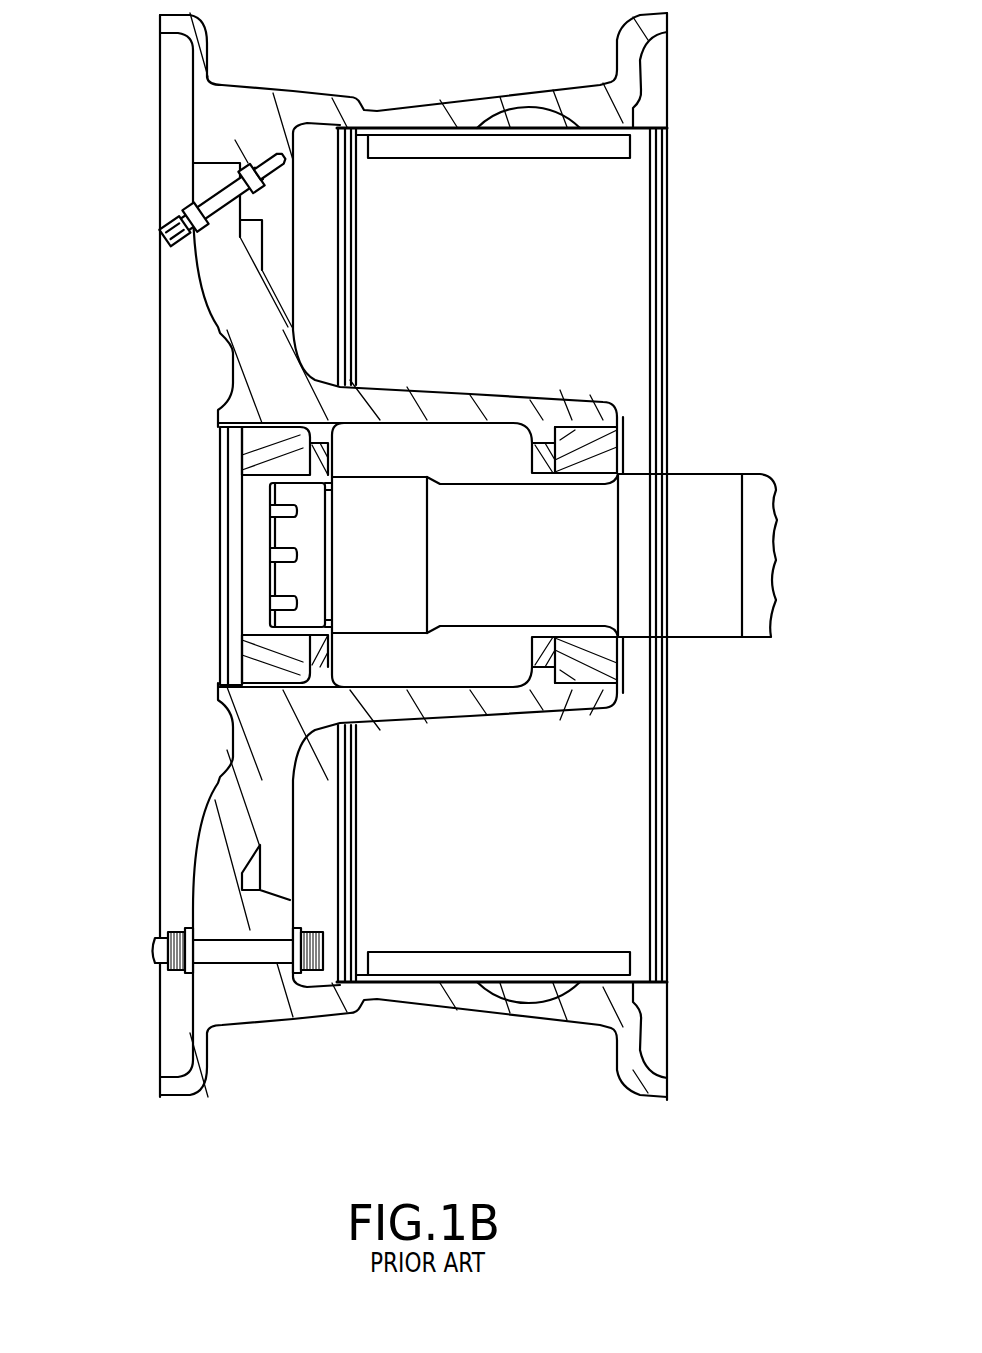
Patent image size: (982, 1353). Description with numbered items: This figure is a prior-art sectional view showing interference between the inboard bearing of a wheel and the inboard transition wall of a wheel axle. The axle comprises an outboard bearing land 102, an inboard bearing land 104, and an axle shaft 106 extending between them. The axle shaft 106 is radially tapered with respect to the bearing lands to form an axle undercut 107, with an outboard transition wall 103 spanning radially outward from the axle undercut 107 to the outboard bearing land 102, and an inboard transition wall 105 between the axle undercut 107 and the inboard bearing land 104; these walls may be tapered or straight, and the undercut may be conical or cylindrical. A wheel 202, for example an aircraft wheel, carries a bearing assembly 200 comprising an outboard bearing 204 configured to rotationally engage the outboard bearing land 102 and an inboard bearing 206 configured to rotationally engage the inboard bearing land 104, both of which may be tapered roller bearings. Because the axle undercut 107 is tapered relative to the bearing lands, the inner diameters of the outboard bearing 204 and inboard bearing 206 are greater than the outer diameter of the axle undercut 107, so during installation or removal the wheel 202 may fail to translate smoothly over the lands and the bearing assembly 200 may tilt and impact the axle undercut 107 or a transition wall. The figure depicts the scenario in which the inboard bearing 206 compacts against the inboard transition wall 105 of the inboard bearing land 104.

The outboard bearing land 102 is at (403, 490).
The outboard transition wall 103 is at (433, 483).
The inboard bearing land 104 is at (702, 488).
The inboard transition wall 105 is at (607, 473).
The axle shaft 106 is at (467, 578).
The axle undercut 107 is at (483, 628).
The bearing assembly 200 is at (253, 660).
The wheel 202 is at (622, 252).
The outboard bearing 204 is at (285, 447).
The inboard bearing 206 is at (567, 447).